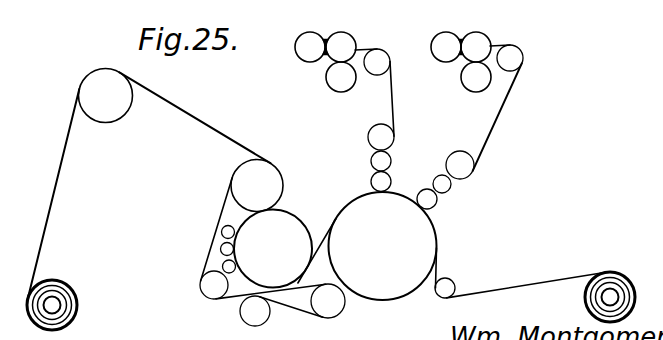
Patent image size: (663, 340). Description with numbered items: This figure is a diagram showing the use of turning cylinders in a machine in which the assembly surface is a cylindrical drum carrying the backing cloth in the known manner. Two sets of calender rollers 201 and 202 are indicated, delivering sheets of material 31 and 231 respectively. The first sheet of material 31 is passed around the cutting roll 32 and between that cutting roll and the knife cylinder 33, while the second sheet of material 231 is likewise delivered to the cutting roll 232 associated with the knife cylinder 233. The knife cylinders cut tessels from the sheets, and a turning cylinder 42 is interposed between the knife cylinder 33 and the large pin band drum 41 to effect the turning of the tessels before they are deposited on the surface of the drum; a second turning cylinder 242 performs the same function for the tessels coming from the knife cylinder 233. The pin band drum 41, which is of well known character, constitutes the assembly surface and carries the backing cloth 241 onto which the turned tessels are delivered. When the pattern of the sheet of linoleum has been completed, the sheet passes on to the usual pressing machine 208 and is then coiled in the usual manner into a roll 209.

The set of calender rollers 201 is at (336, 52).
The set of calender rollers 202 is at (475, 52).
The sheet of material 31 is at (393, 98).
The sheet of material 231 is at (505, 104).
The cutting roll 32 is at (368, 130).
The knife cylinder 33 is at (372, 156).
The turning cylinder 42 is at (371, 181).
The cutting roll 232 is at (460, 151).
The knife cylinder 233 is at (451, 185).
The turning cylinder 242 is at (437, 203).
The pressing machine 208 is at (293, 207).
The pin band drum 41 is at (385, 299).
The roll 209 is at (69, 287).
The backing cloth 241 is at (550, 281).